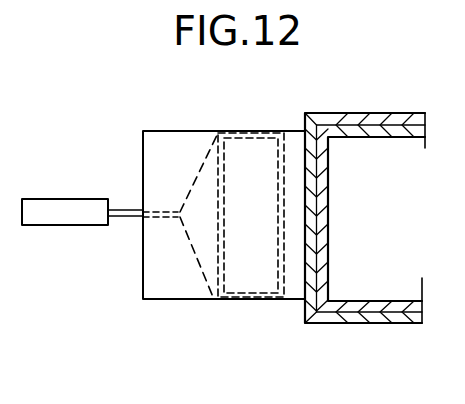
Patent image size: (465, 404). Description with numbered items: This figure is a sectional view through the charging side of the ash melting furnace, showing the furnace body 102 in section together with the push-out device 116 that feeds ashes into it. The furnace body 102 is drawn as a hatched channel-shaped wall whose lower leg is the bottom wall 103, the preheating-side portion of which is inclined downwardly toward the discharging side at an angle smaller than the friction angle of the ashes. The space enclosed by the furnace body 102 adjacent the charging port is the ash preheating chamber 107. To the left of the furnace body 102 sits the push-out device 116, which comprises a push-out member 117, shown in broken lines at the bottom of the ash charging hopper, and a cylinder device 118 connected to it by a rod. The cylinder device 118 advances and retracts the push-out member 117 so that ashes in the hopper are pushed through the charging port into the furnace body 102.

The furnace body 102 is at (382, 113).
The bottom wall 103 is at (383, 287).
The ash preheating chamber 107 is at (384, 226).
The push-out device 116 is at (117, 275).
The push-out member 117 is at (253, 282).
The cylinder device 118 is at (45, 227).